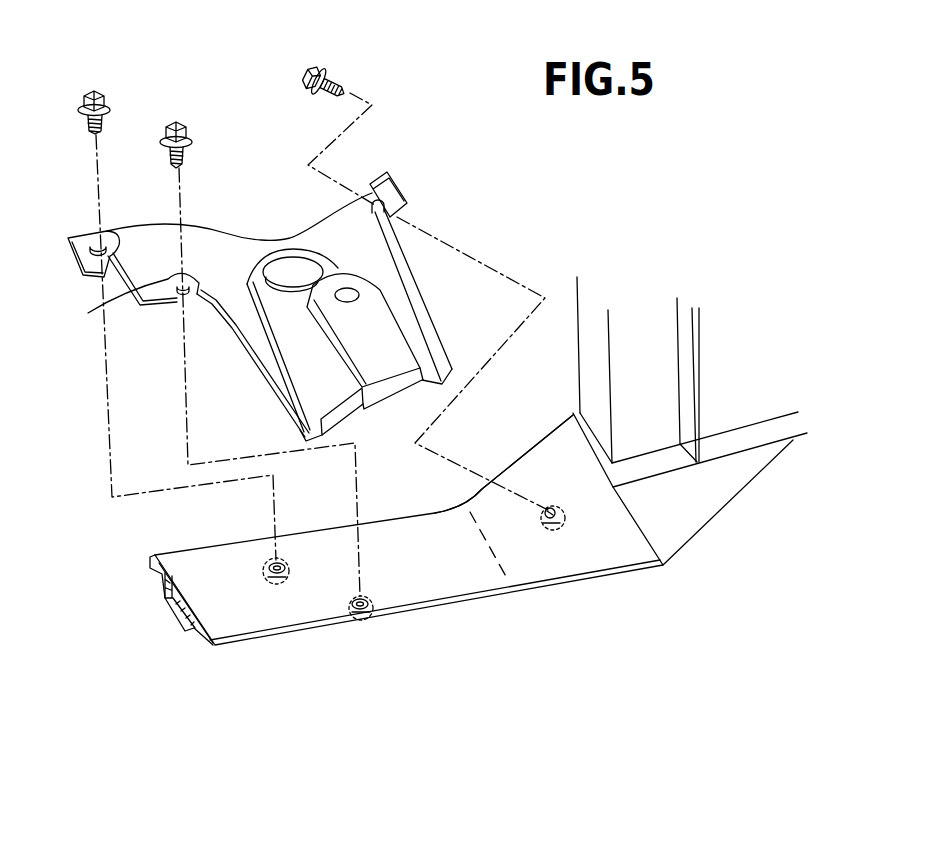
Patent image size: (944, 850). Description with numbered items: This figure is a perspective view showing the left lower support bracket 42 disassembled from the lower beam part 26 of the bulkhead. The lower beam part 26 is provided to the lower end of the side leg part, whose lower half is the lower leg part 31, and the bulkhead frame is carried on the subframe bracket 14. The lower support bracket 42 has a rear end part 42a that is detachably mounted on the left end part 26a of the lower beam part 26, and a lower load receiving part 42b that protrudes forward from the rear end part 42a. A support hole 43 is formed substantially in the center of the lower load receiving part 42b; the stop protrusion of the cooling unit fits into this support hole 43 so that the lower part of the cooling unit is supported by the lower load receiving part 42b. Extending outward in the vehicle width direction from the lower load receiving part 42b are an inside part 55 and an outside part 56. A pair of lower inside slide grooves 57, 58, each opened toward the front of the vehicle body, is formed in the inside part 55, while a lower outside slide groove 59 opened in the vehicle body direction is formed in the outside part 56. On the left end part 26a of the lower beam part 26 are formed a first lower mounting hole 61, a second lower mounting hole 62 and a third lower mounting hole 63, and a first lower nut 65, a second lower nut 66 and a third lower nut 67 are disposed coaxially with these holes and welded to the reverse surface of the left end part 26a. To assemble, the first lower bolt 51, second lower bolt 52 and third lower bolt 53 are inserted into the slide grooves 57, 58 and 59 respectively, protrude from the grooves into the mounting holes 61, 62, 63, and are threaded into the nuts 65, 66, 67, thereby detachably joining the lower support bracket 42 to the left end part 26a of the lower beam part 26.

The subframe bracket 14 is at (755, 398).
The lower beam part 26 is at (242, 650).
The left end part of the lower beam part 26a is at (470, 587).
The lower leg part 31 is at (668, 350).
The lower support bracket 42 is at (428, 296).
The rear end part 42a is at (231, 252).
The lower load receiving part 42b is at (300, 363).
The support hole 43 is at (352, 292).
The first lower bolt 51 is at (80, 98).
The second lower bolt 52 is at (178, 122).
The third lower bolt 53 is at (325, 63).
The inside part 55 is at (143, 245).
The outside part 56 is at (372, 190).
The lower inside slide groove 57 is at (106, 229).
The lower inside slide groove 58 is at (105, 308).
The lower outside slide groove 59 is at (393, 192).
The first lower mounting hole 61 is at (273, 562).
The second lower mounting hole 62 is at (358, 598).
The third lower mounting hole 63 is at (547, 508).
The first lower nut 65 is at (283, 579).
The second lower nut 66 is at (368, 614).
The third lower nut 67 is at (562, 522).